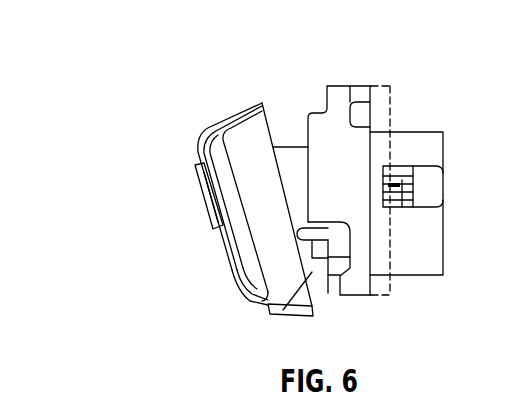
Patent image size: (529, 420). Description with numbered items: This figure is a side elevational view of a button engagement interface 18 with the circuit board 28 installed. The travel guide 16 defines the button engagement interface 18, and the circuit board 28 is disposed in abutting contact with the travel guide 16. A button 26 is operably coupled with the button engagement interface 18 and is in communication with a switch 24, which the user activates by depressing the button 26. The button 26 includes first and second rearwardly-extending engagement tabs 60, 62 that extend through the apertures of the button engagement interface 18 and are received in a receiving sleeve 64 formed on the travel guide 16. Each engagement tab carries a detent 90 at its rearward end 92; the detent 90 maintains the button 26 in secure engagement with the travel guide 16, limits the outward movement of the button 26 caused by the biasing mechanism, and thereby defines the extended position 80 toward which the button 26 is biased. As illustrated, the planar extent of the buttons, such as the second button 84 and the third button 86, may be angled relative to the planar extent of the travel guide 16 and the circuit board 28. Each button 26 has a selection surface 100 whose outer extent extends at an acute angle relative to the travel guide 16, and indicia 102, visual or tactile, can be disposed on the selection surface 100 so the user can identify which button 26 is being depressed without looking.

The travel guide 16 is at (358, 287).
The button engagement interface 18 is at (290, 93).
The switch 24 is at (317, 236).
The button 26 is at (178, 154).
The circuit board 28 is at (395, 100).
The first rearwardly-extending engagement tab 60 is at (295, 165).
The second rearwardly-extending engagement tab 62 is at (295, 308).
The receiving sleeve 64 is at (428, 145).
The extended position 80 is at (147, 232).
The second button 84 is at (195, 148).
The third button 86 is at (221, 127).
The detent 90 is at (402, 186).
The rearward end 92 is at (413, 175).
The selection surface 100 is at (238, 235).
The indicia 102 is at (217, 187).